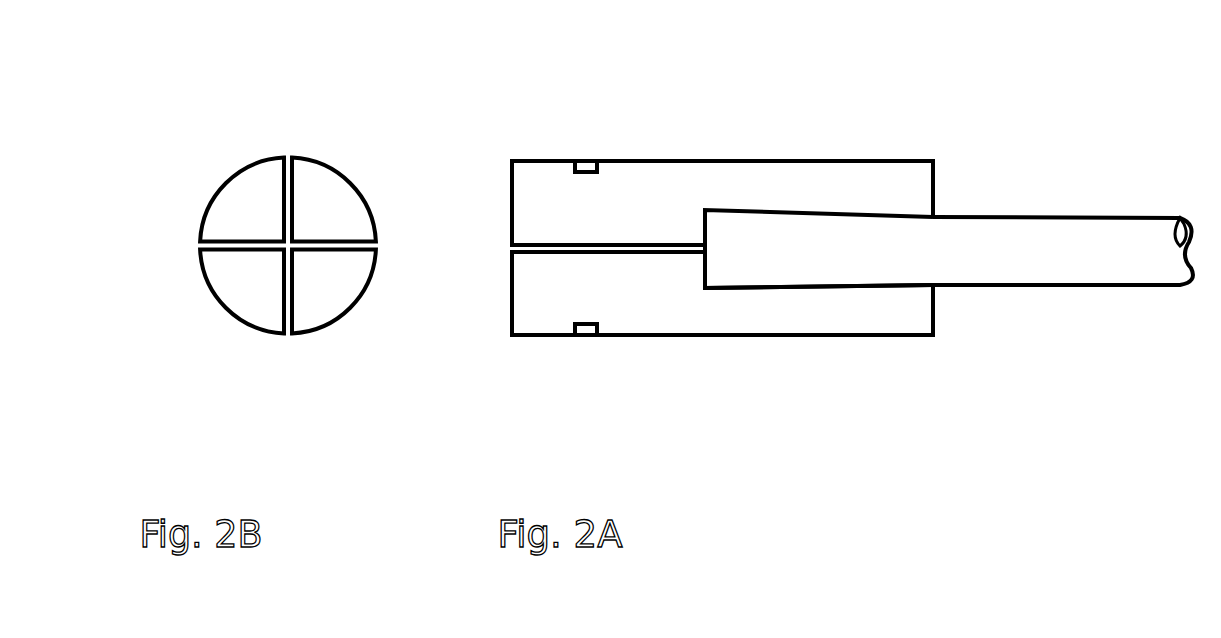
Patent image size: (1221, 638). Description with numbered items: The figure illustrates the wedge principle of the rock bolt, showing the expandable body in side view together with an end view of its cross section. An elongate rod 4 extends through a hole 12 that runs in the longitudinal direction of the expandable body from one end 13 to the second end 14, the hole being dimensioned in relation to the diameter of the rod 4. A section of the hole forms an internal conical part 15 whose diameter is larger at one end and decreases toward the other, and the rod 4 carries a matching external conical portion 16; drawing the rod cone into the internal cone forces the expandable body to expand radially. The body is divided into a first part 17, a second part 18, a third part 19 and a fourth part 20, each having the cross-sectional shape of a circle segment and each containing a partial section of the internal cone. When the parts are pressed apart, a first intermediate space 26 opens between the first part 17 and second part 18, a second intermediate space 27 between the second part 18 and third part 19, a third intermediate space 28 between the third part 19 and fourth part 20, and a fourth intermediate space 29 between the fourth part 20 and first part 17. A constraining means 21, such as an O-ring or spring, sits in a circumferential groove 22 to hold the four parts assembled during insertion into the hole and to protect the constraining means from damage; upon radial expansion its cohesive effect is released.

In FIG. 2A, the elongate rod 4 is at (1050, 230).
In FIG. 2A, the hole 12 is at (637, 250).
In FIG. 2B, the end of the expandable body 13 is at (480, 311).
In FIG. 2A, the second end of the expandable body 14 is at (963, 330).
In FIG. 2A, the internal conical part 15 is at (818, 213).
In FIG. 2A, the external conical portion 16 is at (812, 285).
In FIG. 2B, the first part 17 is at (330, 185).
In FIG. 2B, the second part 18 is at (332, 290).
In FIG. 2B, the third part 19 is at (242, 290).
In FIG. 2B, the fourth part 20 is at (247, 192).
In FIG. 2A, the constraining means 21 is at (584, 165).
In FIG. 2A, the groove 22 is at (586, 166).
In FIG. 2B, the first intermediate space 26 is at (342, 240).
In FIG. 2B, the second intermediate space 27 is at (287, 333).
In FIG. 2B, the third intermediate space 28 is at (220, 238).
In FIG. 2B, the fourth intermediate space 29 is at (292, 173).